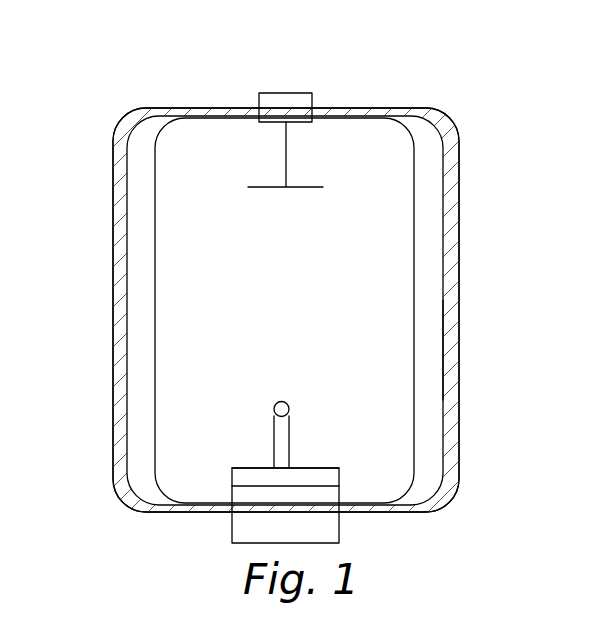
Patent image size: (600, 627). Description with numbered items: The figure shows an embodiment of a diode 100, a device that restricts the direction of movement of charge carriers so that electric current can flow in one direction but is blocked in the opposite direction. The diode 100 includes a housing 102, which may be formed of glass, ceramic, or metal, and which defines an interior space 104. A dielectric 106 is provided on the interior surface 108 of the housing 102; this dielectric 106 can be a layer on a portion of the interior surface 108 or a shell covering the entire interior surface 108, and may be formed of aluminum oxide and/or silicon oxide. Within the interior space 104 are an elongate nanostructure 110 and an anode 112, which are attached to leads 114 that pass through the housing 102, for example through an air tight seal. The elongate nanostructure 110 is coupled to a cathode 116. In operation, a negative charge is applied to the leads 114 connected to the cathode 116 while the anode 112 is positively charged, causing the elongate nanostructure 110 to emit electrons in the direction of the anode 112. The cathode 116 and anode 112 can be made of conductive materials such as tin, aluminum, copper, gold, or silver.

The diode 100 is at (82, 63).
The housing 102 is at (113, 223).
The interior space 104 is at (183, 371).
The dielectric 106 is at (157, 237).
The interior surface 108 is at (443, 312).
The elongate nanostructure 110 is at (274, 440).
The anode 112 is at (300, 188).
The leads 114 is at (259, 103).
The cathode 116 is at (315, 468).